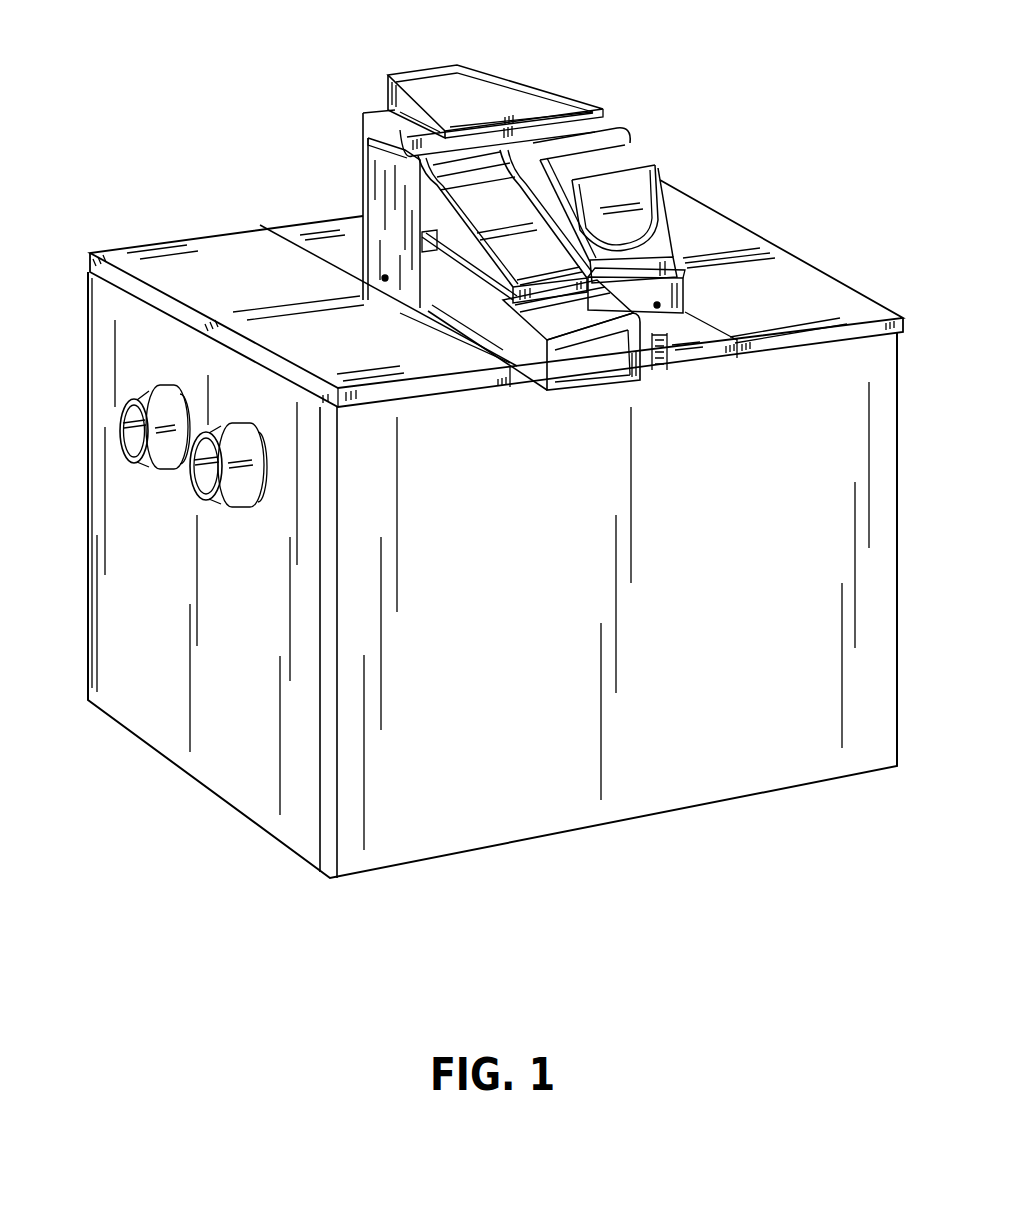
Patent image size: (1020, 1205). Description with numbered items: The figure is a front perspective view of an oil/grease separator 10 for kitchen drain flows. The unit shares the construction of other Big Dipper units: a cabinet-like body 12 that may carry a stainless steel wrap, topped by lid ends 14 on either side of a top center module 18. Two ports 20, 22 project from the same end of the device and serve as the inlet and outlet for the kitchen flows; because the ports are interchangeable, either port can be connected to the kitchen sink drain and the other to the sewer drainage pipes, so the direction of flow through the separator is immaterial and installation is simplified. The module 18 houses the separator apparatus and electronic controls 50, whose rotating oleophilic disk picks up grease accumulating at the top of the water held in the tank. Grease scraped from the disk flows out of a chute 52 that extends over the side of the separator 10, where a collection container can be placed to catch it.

The separator 10 is at (225, 90).
The cabinet base 12 is at (148, 722).
The lid ends 14 is at (192, 255).
The top center module 18 is at (320, 235).
The port 20 is at (138, 399).
The port 22 is at (222, 428).
The separator apparatus and electronic controls 50 is at (520, 100).
The chute 52 is at (604, 330).